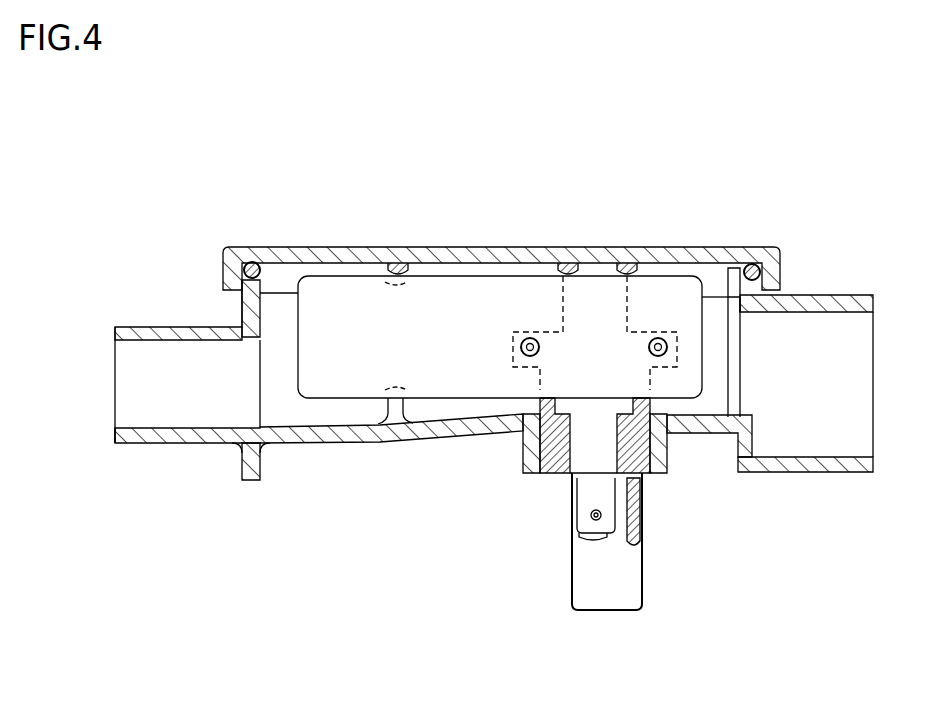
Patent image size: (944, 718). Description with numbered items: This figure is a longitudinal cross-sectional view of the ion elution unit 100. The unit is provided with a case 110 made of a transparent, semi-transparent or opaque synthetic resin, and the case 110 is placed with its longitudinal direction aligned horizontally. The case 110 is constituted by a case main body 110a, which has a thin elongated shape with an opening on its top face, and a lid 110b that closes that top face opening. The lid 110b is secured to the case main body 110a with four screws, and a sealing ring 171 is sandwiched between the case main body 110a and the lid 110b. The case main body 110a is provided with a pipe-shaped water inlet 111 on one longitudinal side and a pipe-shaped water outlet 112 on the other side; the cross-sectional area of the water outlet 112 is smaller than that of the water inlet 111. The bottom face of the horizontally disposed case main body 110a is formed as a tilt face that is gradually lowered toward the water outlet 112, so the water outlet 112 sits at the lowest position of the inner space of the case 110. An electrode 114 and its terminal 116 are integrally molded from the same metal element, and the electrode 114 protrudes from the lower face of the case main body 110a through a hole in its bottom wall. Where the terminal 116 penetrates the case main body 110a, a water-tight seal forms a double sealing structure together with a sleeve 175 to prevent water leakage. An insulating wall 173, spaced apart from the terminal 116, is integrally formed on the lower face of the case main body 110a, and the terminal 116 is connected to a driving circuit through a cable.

The ion elution unit 100 is at (185, 177).
The case 110 is at (318, 446).
The case main body 110a is at (432, 428).
The lid 110b is at (479, 247).
The water inlet 111 is at (822, 295).
The water outlet 112 is at (158, 326).
The electrode 114 is at (345, 276).
The terminal 116 is at (597, 542).
The sealing ring 171 is at (252, 262).
The insulating wall 173 is at (608, 612).
The sleeve 175 is at (645, 470).